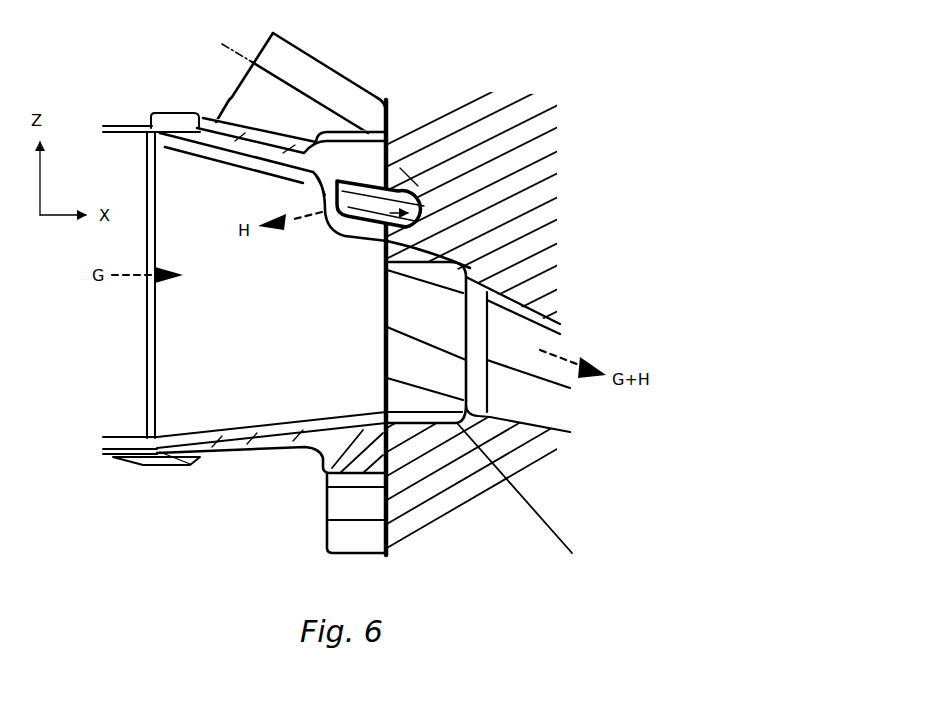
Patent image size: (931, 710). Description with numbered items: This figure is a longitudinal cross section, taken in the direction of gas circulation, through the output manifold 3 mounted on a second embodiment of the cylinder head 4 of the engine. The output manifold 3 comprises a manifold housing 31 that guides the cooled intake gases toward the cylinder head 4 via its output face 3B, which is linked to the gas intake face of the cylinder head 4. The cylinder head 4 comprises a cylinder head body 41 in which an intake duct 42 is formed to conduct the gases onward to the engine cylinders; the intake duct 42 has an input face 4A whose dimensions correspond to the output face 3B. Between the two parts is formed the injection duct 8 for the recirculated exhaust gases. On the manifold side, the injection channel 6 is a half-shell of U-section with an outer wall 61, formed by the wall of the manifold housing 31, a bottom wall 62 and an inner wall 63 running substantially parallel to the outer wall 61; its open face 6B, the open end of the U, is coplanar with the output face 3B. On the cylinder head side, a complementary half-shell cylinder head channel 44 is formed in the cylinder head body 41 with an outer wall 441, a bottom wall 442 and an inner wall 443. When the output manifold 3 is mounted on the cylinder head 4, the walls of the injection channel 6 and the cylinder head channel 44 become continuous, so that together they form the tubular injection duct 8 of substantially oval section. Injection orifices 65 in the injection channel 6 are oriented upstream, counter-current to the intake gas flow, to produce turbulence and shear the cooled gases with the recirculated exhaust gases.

The output manifold 3 is at (180, 86).
The manifold housing 31 is at (247, 456).
The output face 3B is at (453, 366).
The cylinder head 4 is at (536, 478).
The input face 4A is at (376, 343).
The cylinder head body 41 is at (513, 296).
The intake duct 42 is at (543, 522).
The cylinder head channel 44 is at (444, 175).
The outer wall 441 is at (418, 187).
The bottom wall 442 is at (430, 195).
The inner wall 443 is at (433, 235).
The injection channel 6 is at (322, 250).
The open face 6B is at (436, 218).
The outer wall 61 is at (357, 167).
The bottom wall 62 is at (322, 188).
The inner wall 63 is at (367, 243).
The injection orifices 65 is at (333, 207).
The injection duct 8 is at (400, 168).